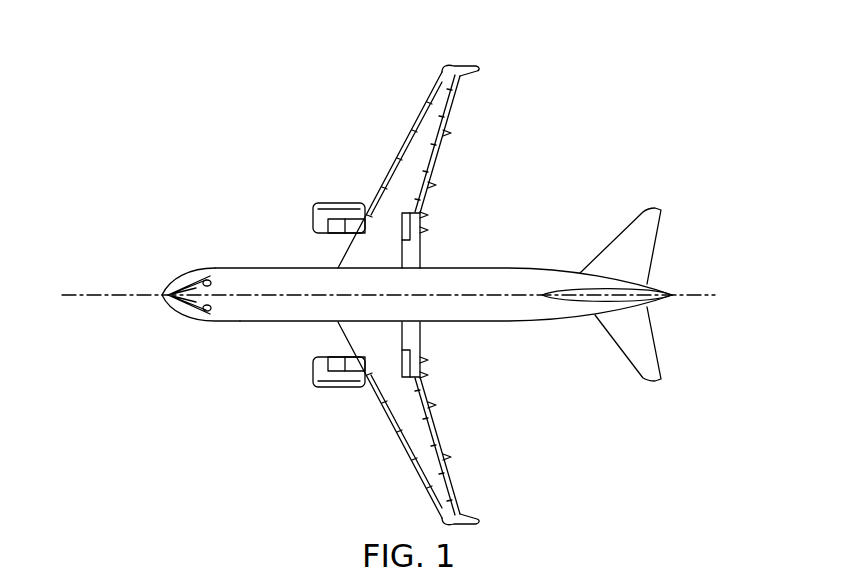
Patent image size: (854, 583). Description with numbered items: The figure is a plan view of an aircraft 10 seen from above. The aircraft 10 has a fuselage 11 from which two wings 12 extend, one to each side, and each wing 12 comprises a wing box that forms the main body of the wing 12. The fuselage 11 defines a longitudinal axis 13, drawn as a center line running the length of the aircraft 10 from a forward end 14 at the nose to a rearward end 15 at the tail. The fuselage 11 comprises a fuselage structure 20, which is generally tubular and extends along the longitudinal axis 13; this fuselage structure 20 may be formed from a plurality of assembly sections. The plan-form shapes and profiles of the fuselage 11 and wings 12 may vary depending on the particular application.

The aircraft 10 is at (620, 79).
The fuselage 11 is at (510, 285).
The wing 12 is at (438, 103).
The longitudinal axis 13 is at (80, 296).
The forward end 14 is at (225, 288).
The rearward end 15 is at (580, 283).
The fuselage structure 20 is at (240, 322).